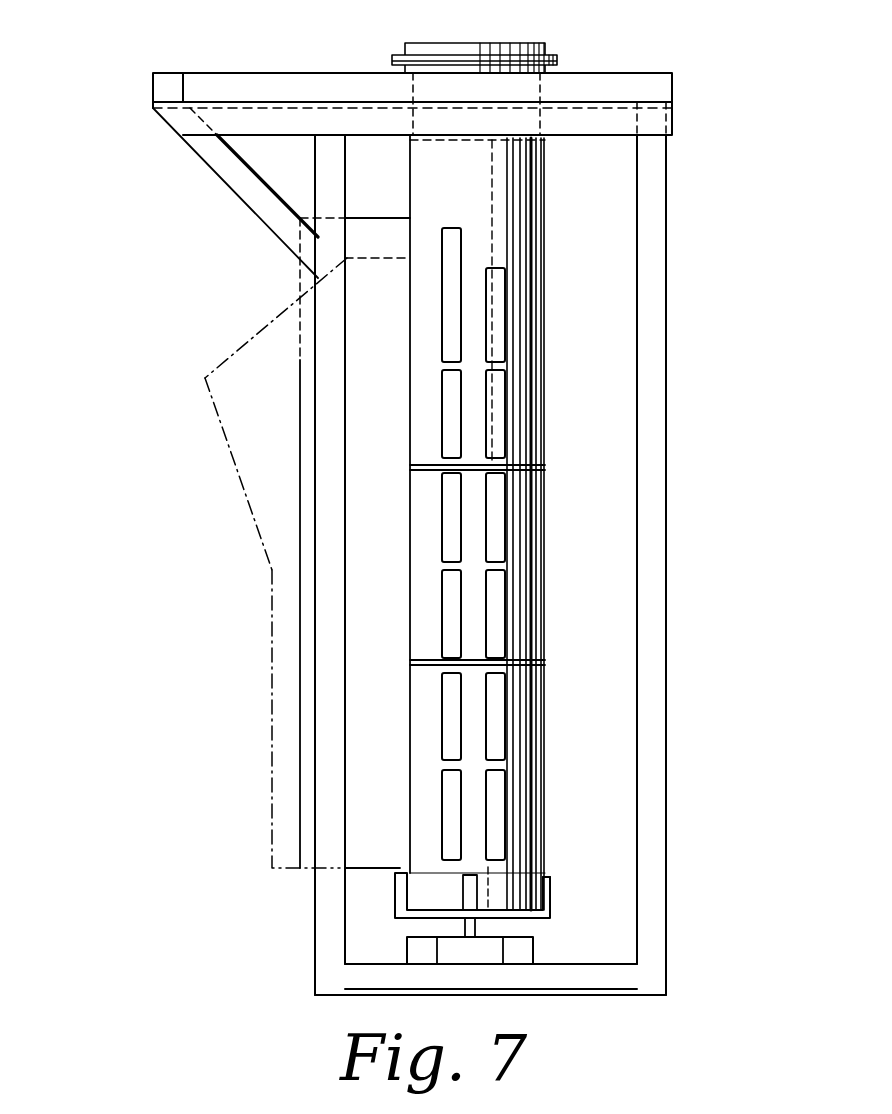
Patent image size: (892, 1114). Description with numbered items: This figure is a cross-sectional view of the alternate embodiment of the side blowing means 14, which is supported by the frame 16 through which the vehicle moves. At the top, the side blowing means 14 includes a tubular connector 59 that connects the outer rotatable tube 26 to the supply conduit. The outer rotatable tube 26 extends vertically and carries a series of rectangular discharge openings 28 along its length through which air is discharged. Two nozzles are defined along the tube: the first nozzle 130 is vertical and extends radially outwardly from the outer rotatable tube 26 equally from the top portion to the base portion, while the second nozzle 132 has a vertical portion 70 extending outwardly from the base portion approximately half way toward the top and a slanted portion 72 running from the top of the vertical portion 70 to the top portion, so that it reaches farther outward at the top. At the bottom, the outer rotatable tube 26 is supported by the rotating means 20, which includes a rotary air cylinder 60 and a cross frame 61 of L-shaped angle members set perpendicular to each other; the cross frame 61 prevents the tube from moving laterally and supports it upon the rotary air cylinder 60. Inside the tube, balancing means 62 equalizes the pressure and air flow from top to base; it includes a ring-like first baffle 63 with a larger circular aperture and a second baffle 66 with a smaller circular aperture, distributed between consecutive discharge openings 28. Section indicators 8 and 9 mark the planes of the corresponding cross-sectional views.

The side blowing means 14 is at (540, 183).
The frame 16 is at (660, 225).
The rotating means 20 is at (553, 912).
The outer rotatable tube 26 is at (535, 369).
The discharge opening 28 is at (455, 258).
The connector 59 is at (428, 61).
The rotary air cylinder 60 is at (525, 953).
The cross frame 61 is at (550, 878).
The balancing means 62 is at (418, 659).
The first baffle 63 is at (418, 465).
The second baffle 66 is at (420, 668).
The vertical portion 70 is at (272, 762).
The slanted portion 72 is at (230, 452).
The first nozzle 130 is at (370, 218).
The second nozzle 132 is at (260, 327).
The section line 8- 8 is at (190, 307).
The section line 9- 9 is at (202, 340).